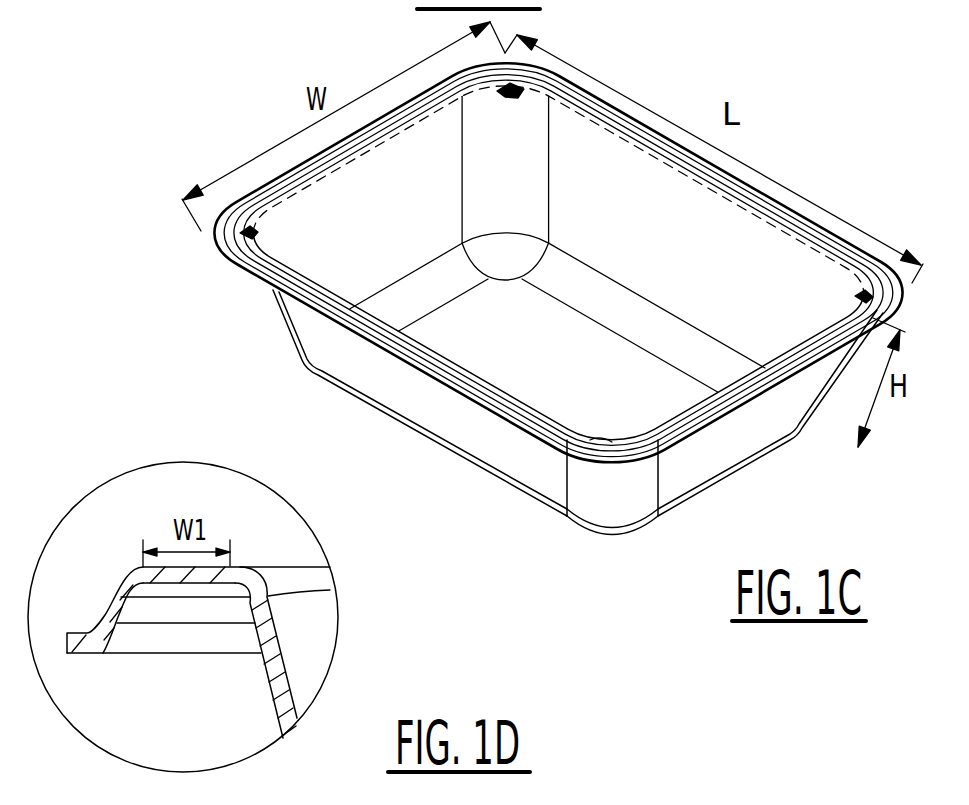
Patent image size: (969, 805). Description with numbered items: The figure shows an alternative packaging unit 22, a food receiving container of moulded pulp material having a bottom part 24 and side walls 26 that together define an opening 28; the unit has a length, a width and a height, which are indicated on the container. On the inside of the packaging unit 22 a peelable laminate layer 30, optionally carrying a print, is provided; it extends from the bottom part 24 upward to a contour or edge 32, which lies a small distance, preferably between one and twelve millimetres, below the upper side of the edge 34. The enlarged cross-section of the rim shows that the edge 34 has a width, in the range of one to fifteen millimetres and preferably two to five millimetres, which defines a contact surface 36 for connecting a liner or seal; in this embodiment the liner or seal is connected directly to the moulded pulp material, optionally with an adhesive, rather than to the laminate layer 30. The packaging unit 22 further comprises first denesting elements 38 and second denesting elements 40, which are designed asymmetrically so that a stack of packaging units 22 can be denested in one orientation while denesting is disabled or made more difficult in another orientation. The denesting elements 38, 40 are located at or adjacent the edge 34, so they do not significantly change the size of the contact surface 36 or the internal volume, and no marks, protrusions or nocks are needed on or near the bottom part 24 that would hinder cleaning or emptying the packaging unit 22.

In FIG. 1C, the packaging unit 22 is at (170, 150).
In FIG. 1C, the bottom part 24 is at (667, 408).
In FIG. 1C, the side walls 26 is at (333, 350).
In FIG. 1C, the opening 28 is at (240, 293).
In FIG. 1C, the peelable laminate layer 30 is at (415, 243).
In FIG. 1C, the contour or edge 32 is at (660, 173).
In FIG. 1C, the edge 34 is at (762, 207).
In FIG. 1D, the edge 34 is at (233, 527).
In FIG. 1C, the contact surface 36 is at (558, 336).
In FIG. 1D, the contact surface 36 is at (240, 567).
In FIG. 1C, the first denesting elements 38 is at (522, 99).
In FIG. 1C, the second denesting elements 40 is at (860, 300).